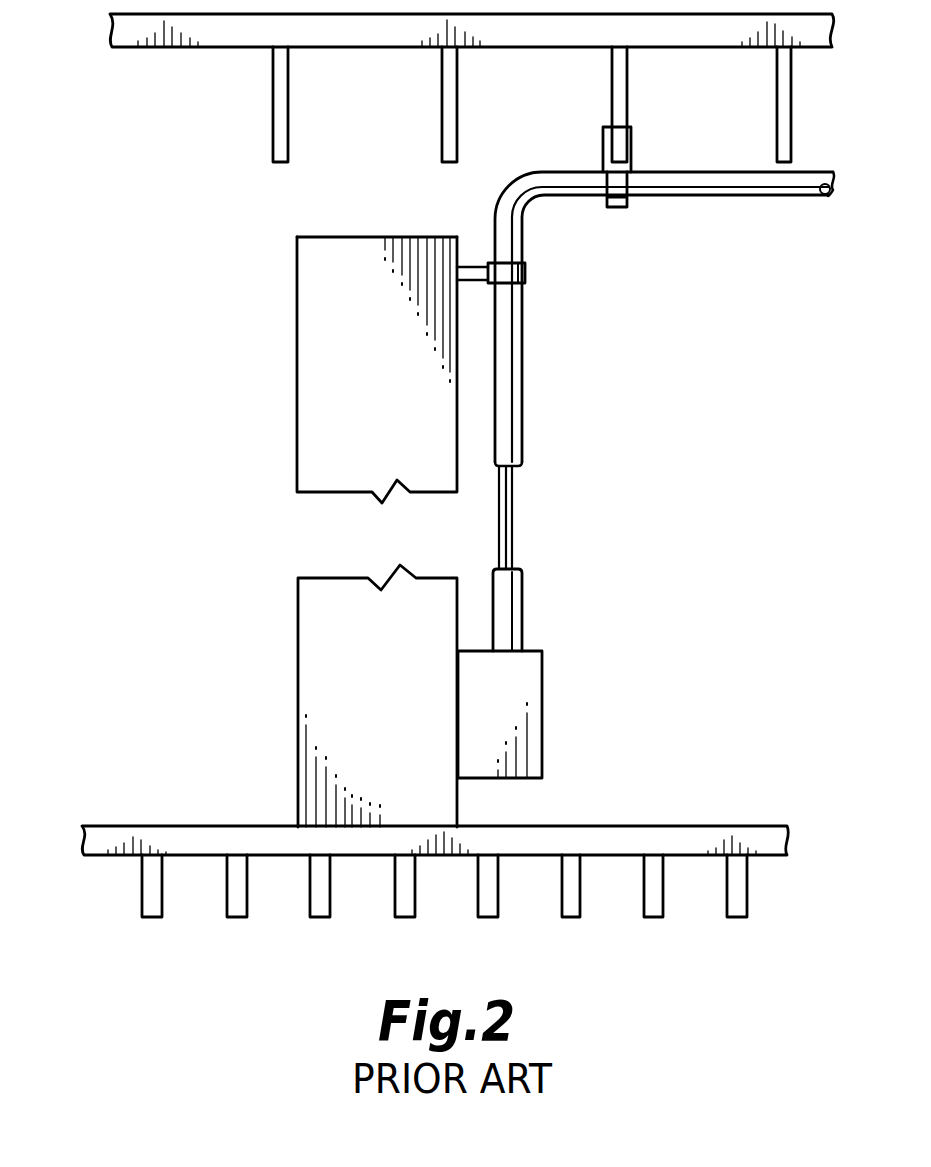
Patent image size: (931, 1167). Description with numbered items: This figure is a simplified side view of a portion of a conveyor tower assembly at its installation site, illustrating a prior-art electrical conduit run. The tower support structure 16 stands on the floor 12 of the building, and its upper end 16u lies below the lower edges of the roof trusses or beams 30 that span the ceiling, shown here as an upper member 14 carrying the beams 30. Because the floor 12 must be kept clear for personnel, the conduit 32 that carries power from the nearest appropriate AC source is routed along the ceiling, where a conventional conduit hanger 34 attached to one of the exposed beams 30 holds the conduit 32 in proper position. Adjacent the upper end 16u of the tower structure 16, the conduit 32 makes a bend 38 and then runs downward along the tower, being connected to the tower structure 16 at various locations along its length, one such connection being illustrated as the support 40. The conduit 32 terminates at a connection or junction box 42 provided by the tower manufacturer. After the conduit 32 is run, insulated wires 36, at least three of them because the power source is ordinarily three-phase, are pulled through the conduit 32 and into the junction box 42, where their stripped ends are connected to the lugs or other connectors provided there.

The floor 12 is at (68, 826).
The upper printed circuit board 14 is at (100, 14).
The tower support structure 16 is at (297, 358).
The upper end of the tower structure 16u is at (385, 237).
The roof trusses or beams 30 is at (273, 88).
The conduit 32 is at (787, 197).
The conduit hanger 34 is at (631, 143).
The insulated wires 36 is at (514, 497).
The bend 38 is at (543, 212).
The support 40 is at (526, 273).
The junction box 42 is at (543, 710).